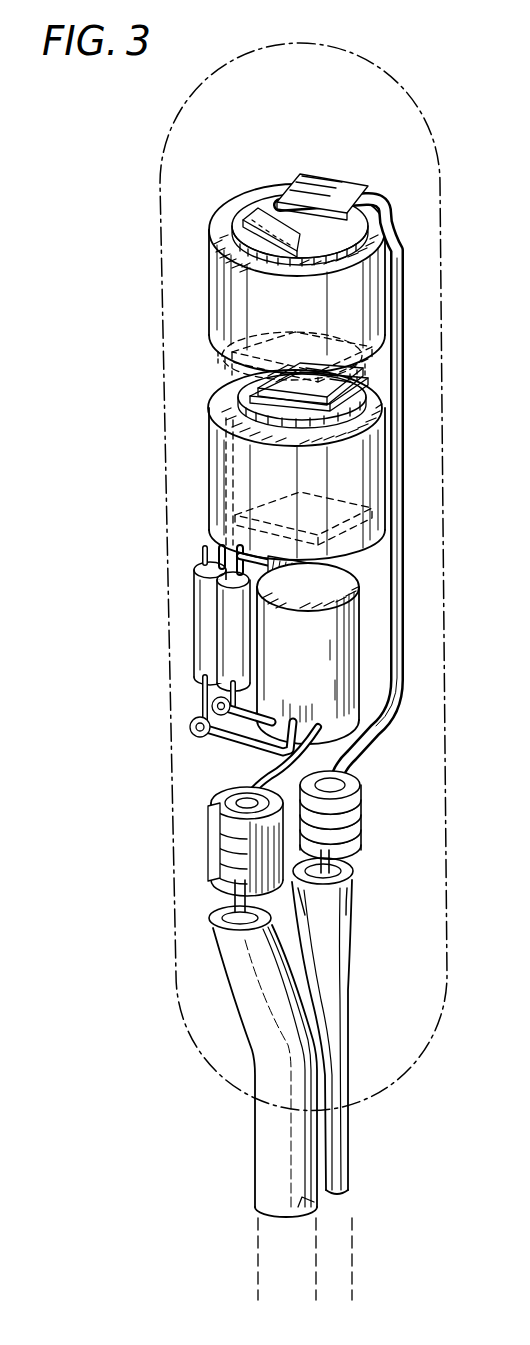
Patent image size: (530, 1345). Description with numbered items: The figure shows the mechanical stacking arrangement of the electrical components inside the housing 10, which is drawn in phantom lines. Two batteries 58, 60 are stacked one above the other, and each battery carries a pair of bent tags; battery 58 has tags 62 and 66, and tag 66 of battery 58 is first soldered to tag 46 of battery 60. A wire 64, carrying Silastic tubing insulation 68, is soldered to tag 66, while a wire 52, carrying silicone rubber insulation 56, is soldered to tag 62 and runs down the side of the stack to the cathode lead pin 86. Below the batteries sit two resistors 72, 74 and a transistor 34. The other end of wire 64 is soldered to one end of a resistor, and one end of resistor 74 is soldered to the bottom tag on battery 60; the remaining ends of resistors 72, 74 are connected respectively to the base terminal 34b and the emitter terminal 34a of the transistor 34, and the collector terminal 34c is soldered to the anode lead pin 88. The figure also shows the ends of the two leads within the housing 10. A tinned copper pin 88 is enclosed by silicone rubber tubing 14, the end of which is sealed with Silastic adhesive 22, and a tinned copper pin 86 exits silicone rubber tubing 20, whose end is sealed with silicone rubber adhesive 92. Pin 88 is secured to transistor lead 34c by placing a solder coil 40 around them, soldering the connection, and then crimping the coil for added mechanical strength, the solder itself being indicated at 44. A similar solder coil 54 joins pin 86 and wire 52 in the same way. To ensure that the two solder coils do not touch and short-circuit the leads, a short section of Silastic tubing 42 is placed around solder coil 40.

The housing 10 is at (388, 61).
The silicone rubber tubing 14 is at (265, 1138).
The silicone rubber tubing 20 is at (340, 1130).
The Silastic adhesive 22 is at (218, 930).
The transistor 34 is at (310, 648).
The emitter terminal 34a is at (248, 708).
The base terminal 34b is at (205, 745).
The collector terminal 34c is at (330, 750).
The solder coil 40 is at (223, 843).
The Silastic tubing 42 is at (210, 822).
The solder 44 is at (245, 797).
The tag 46 is at (343, 397).
The wire 52 is at (297, 213).
The solder coil 54 is at (361, 831).
The silicone rubber insulation 56 is at (381, 757).
The battery 58 is at (278, 308).
The battery 60 is at (305, 492).
The tag 62 is at (334, 182).
The wire 64 is at (233, 548).
The tag 66 is at (323, 336).
The Silastic tubing insulation 68 is at (228, 488).
The resistor 72 is at (203, 605).
The resistor 74 is at (226, 645).
The cathode lead pin 86 is at (328, 892).
The anode lead pin 88 is at (240, 903).
The silicone rubber adhesive 92 is at (352, 870).